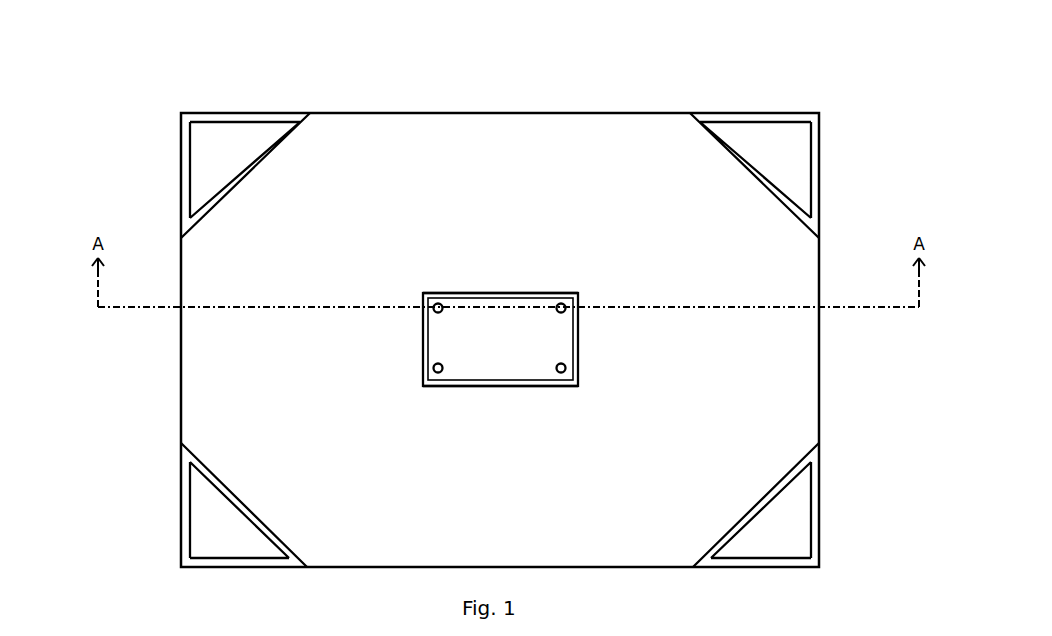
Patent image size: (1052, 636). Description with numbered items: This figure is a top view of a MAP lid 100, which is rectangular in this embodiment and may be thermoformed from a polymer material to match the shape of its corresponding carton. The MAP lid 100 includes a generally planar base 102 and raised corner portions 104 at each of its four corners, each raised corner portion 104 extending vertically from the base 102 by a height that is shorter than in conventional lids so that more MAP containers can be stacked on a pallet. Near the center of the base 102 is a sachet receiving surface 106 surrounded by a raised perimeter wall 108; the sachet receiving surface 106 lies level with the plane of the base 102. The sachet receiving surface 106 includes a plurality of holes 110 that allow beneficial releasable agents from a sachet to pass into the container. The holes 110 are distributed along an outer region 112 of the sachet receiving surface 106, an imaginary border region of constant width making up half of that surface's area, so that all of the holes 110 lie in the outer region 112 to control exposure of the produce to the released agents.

The MAP lid 100 is at (137, 98).
The base 102 is at (630, 237).
The raised corner portions 104 is at (762, 113).
The sachet receiving surface 106 is at (520, 346).
The raised perimeter wall 108 is at (489, 292).
The holes 110 is at (433, 368).
The outer region 112 is at (501, 369).